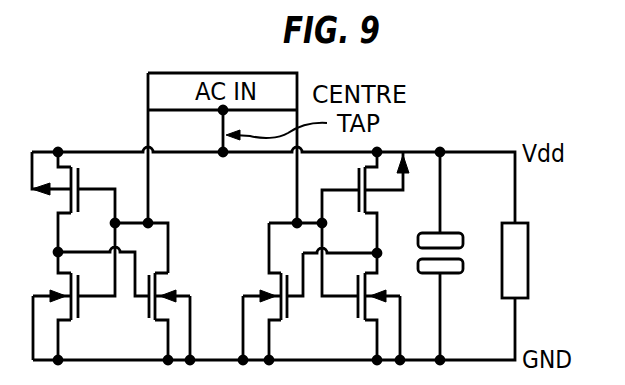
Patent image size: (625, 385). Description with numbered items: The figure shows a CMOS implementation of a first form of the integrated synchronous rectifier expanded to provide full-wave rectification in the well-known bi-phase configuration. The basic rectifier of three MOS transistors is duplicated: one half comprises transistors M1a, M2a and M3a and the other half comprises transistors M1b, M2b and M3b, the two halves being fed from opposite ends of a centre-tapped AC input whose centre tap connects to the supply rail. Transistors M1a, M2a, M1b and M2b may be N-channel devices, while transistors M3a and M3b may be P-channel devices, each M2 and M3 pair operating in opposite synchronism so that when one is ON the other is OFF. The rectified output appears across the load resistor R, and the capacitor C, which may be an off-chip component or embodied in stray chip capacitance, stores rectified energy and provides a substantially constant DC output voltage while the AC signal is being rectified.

The P-channel MOS transistor M3a is at (82, 202).
The N-channel MOS transistor M2a is at (81, 306).
The N-channel MOS transistor M1a is at (184, 313).
The N-channel MOS transistor M1b is at (262, 291).
The N-channel MOS transistor M2b is at (353, 306).
The P-channel MOS transistor M3b is at (358, 202).
The capacitor C is at (438, 256).
The load resistor R is at (549, 260).